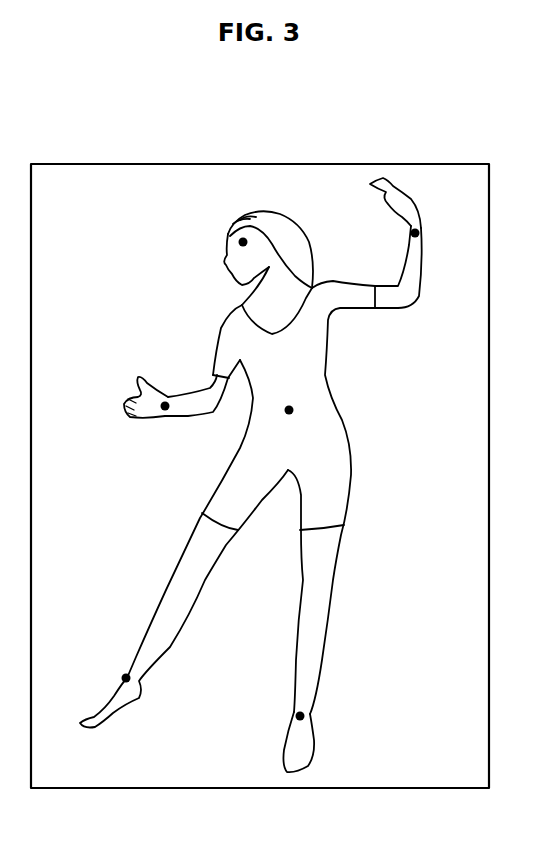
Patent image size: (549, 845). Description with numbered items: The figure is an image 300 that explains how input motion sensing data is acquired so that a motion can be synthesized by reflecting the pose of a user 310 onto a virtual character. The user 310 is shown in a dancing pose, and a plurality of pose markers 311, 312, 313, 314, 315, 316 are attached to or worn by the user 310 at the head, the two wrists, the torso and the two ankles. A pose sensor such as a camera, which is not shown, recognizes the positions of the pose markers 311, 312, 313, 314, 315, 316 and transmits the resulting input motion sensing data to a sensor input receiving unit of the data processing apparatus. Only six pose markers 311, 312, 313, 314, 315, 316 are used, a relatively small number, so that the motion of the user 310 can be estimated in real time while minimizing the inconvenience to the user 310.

The image 300 is at (234, 112).
The user 310 is at (353, 463).
The pose marker 311 is at (238, 236).
The pose marker 312 is at (168, 398).
The pose marker 313 is at (410, 233).
The pose marker 314 is at (295, 408).
The pose marker 315 is at (122, 672).
The pose marker 316 is at (310, 713).